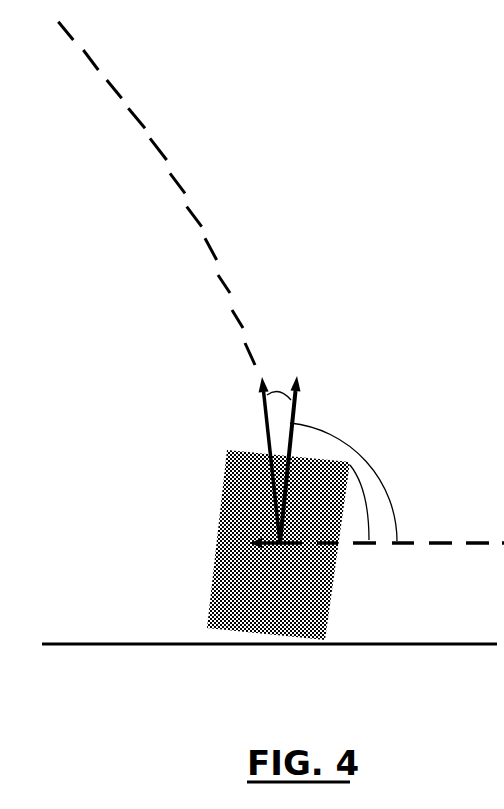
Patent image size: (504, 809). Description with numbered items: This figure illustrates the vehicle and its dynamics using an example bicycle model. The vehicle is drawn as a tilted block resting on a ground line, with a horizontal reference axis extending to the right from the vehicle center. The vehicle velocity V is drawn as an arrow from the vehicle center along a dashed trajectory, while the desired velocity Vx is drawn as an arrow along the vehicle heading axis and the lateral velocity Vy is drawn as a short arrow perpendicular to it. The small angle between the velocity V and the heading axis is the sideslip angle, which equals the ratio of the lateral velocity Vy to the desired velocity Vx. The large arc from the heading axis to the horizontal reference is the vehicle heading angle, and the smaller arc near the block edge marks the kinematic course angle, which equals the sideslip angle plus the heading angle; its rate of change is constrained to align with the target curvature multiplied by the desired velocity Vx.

The vehicle velocity V is at (232, 393).
The desired velocity Vx is at (314, 448).
The lateral velocity Vy is at (254, 572).